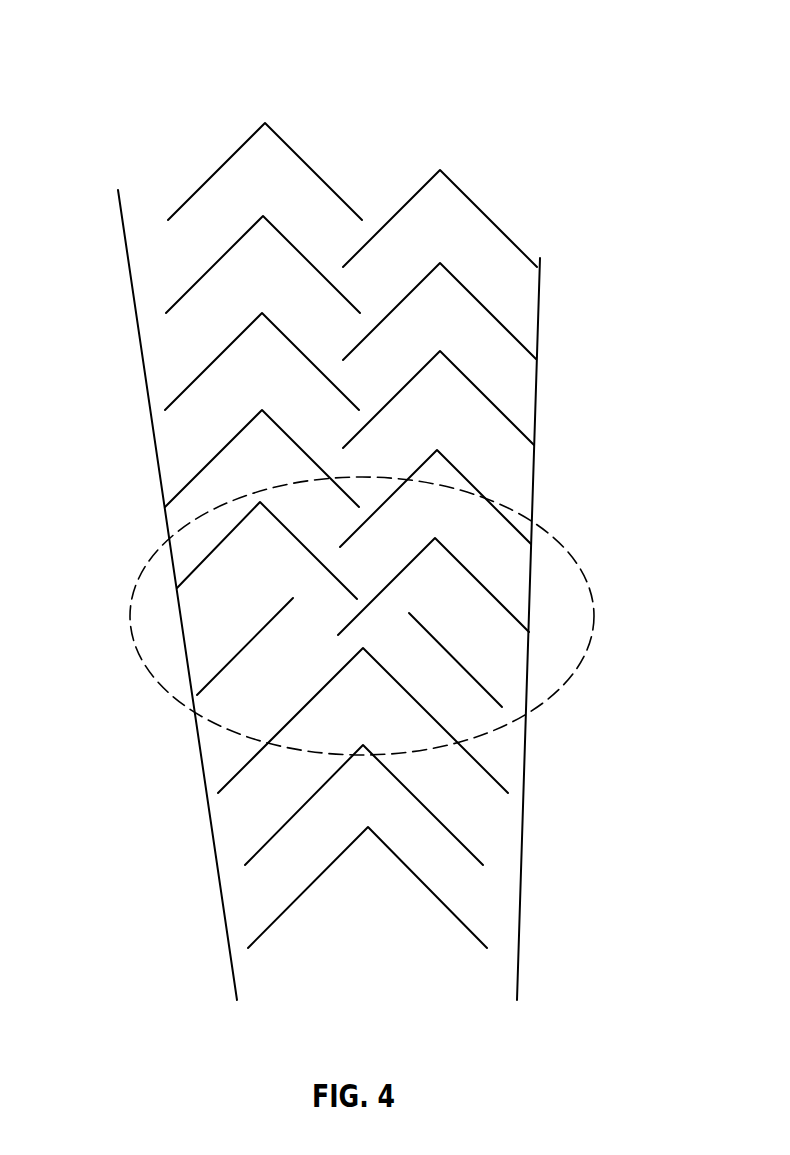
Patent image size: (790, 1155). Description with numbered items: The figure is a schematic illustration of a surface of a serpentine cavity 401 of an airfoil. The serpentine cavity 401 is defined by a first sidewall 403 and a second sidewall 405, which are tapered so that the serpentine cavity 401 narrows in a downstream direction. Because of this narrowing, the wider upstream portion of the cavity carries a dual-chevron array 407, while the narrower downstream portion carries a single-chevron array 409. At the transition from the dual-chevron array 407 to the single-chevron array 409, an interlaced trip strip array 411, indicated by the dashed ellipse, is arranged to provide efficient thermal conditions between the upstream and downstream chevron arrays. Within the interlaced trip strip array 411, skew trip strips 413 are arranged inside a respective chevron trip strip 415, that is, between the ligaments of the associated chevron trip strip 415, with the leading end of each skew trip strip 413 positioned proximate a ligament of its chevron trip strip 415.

The serpentine cavity 401 is at (347, 86).
The first sidewall 403 is at (145, 375).
The second sidewall 405 is at (537, 397).
The dual-chevron array 407 is at (618, 207).
The single-chevron array 409 is at (563, 708).
The interlaced trip strip array 411 is at (130, 623).
The skew trip strip 413 is at (242, 650).
The chevron trip strip 415 is at (205, 557).